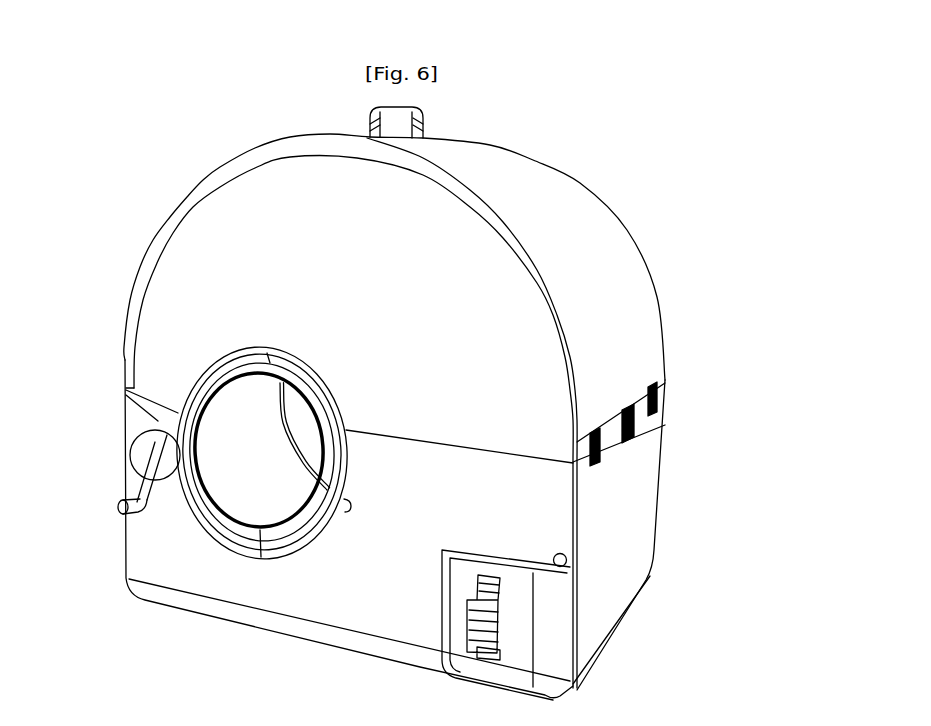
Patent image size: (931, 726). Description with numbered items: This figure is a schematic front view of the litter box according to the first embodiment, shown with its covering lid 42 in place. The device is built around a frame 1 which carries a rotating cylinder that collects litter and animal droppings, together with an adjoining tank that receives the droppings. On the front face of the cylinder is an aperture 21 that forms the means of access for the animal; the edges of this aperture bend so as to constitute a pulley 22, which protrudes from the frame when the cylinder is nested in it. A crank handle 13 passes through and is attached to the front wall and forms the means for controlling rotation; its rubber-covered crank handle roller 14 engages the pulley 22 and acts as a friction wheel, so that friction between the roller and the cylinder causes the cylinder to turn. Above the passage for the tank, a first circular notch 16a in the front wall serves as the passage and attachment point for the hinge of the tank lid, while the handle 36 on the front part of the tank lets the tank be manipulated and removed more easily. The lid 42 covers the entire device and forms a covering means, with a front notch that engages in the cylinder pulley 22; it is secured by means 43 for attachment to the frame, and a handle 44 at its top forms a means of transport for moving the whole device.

The frame 1 is at (408, 393).
The crank handle 13 is at (137, 440).
The crank handle roller 14 is at (150, 420).
The first circular notch 16a is at (568, 565).
The aperture 21 is at (262, 475).
The pulley 22 is at (191, 440).
The handle 36 is at (483, 633).
The lid 42 is at (478, 304).
The means for attachment 43 is at (620, 435).
The handle 44 is at (423, 118).